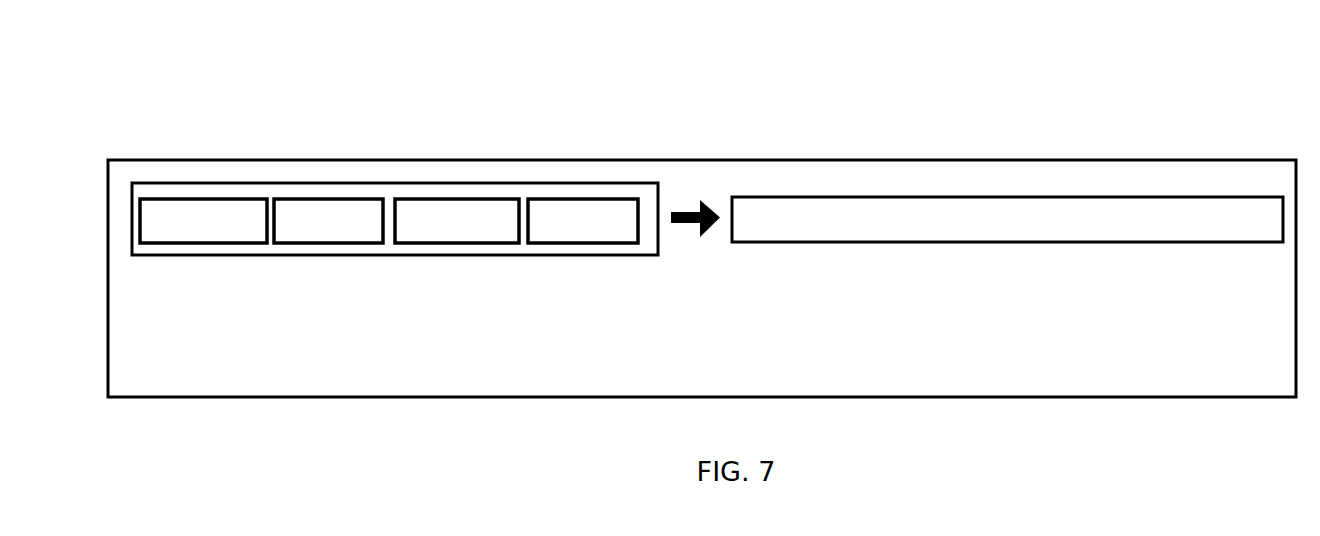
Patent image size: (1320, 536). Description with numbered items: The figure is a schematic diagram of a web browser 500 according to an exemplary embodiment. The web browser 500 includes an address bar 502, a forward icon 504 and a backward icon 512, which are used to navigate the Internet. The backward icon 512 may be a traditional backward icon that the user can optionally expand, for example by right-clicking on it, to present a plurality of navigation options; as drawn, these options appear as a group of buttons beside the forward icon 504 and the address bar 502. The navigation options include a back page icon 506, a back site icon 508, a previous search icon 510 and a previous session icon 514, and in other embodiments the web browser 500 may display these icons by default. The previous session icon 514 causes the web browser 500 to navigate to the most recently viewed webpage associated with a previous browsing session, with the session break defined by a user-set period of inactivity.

The web browser 500 is at (1146, 144).
The address bar 502 is at (1008, 196).
The forward icon 504 is at (708, 194).
The back page icon 506 is at (608, 196).
The back site icon 508 is at (458, 196).
The previous search icon 510 is at (332, 196).
The backward icon 512 is at (296, 183).
The previous session icon 514 is at (222, 196).